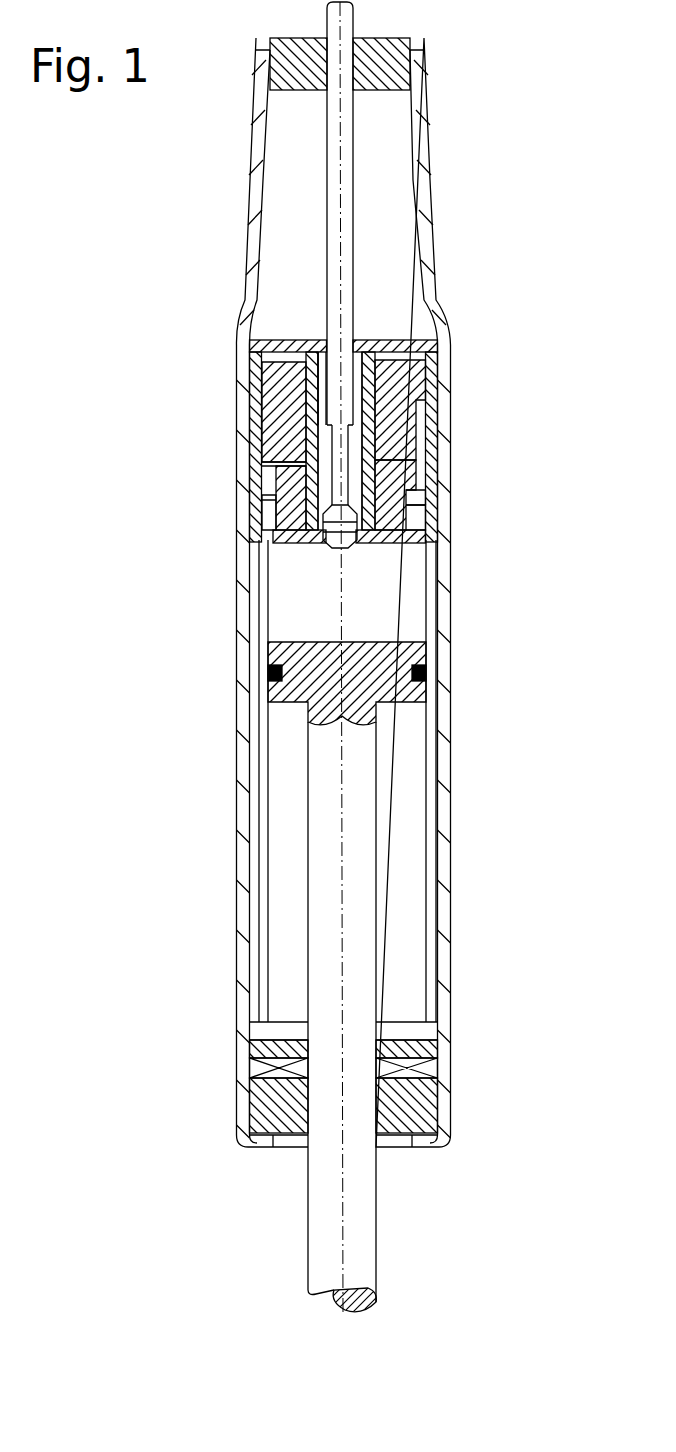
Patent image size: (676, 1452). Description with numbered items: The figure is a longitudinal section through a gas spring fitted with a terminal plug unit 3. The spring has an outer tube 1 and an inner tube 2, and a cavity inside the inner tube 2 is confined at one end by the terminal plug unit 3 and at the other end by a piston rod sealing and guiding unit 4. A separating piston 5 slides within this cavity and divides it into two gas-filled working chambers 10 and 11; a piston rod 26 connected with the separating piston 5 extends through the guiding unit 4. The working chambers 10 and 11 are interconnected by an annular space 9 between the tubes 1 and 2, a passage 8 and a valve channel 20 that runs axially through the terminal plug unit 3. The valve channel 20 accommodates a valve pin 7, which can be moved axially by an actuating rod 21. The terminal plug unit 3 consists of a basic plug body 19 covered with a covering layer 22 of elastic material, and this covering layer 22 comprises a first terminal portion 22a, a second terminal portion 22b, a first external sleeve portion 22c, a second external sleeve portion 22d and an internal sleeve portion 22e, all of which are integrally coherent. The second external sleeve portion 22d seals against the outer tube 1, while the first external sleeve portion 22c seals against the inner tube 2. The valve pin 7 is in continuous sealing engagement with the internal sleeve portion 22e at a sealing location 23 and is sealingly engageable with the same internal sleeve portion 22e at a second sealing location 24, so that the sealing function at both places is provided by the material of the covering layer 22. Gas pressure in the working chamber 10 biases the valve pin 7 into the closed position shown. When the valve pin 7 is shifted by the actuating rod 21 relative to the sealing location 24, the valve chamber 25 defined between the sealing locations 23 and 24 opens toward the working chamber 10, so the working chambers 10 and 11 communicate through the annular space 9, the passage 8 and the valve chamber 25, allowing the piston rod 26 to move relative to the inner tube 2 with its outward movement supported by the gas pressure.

The outer tube 1 is at (446, 605).
The inner tube 2 is at (432, 535).
The terminal plug unit 3 is at (420, 456).
The piston rod sealing and guiding unit 4 is at (440, 1062).
The separating piston 5 is at (385, 680).
The valve pin 7 is at (270, 508).
The passage 8 is at (258, 432).
The annular space 9 is at (270, 676).
The working chamber 10 is at (280, 586).
The working chamber 11 is at (283, 810).
The basic plug body 19 is at (420, 488).
The valve channel 20 is at (378, 444).
The actuating rod 21 is at (350, 268).
The covering layer 22 is at (248, 362).
The first terminal portion 22a is at (395, 545).
The second terminal portion 22b is at (408, 345).
The first external sleeve portion 22c is at (422, 518).
The second external sleeve portion 22d is at (436, 402).
The internal sleeve portion 22e is at (262, 405).
The sealing location 23 is at (322, 342).
The sealing location 24 is at (350, 549).
The valve chamber 25 is at (290, 464).
The piston rod 26 is at (360, 825).